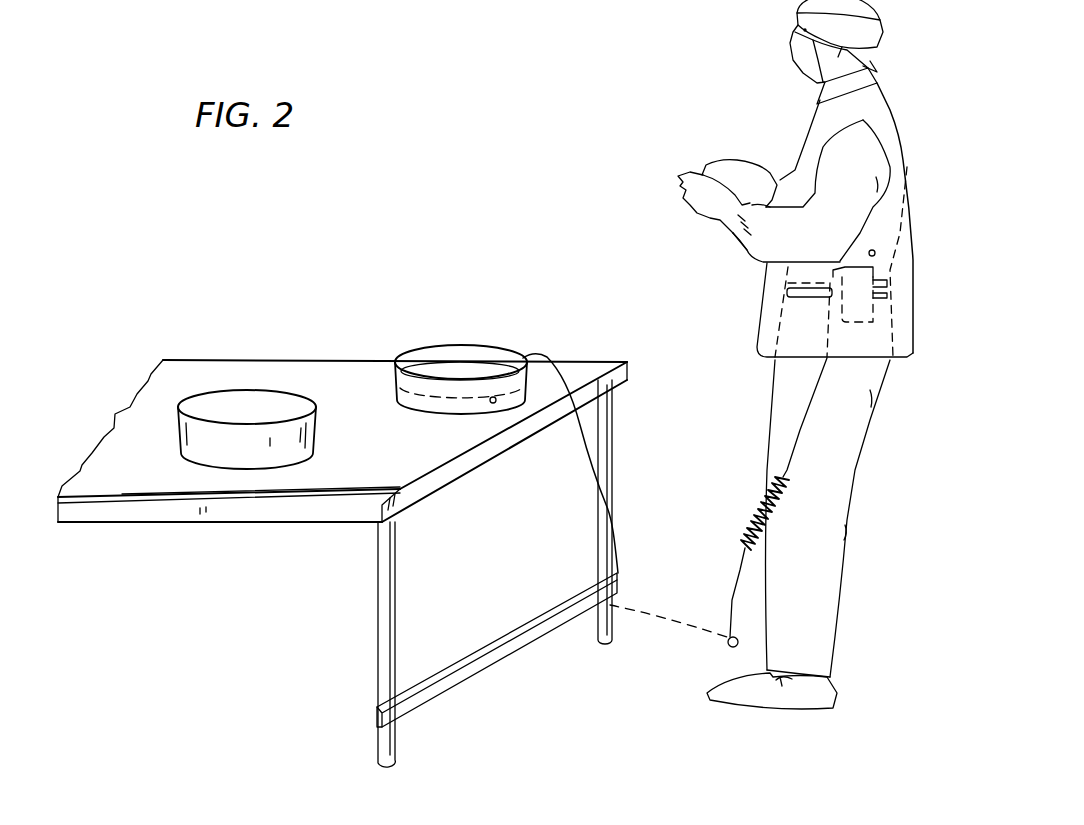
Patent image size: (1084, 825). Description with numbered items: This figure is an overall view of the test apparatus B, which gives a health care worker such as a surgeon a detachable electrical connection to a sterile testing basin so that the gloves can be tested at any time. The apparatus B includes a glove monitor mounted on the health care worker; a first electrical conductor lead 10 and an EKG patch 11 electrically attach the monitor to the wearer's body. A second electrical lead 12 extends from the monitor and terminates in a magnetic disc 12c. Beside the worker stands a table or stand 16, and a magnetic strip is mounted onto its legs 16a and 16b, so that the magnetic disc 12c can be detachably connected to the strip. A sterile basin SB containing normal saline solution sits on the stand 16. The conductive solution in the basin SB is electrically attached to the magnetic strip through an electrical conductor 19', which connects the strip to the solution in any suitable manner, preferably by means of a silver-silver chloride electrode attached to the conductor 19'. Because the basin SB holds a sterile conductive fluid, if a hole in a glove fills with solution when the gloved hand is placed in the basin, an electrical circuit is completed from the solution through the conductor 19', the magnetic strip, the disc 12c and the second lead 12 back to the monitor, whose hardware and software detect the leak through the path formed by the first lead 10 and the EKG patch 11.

The first electrical conductor lead 10 is at (873, 262).
The EKG patch 11 is at (876, 247).
The second electrical lead 12 is at (813, 428).
The magnetic disc 12c is at (726, 646).
The table or stand 16 is at (243, 358).
The leg 16a is at (378, 630).
The leg 16b is at (613, 430).
The electrical conductor 19' is at (625, 495).
The sterile basin SB is at (452, 346).
The test apparatus B is at (543, 305).